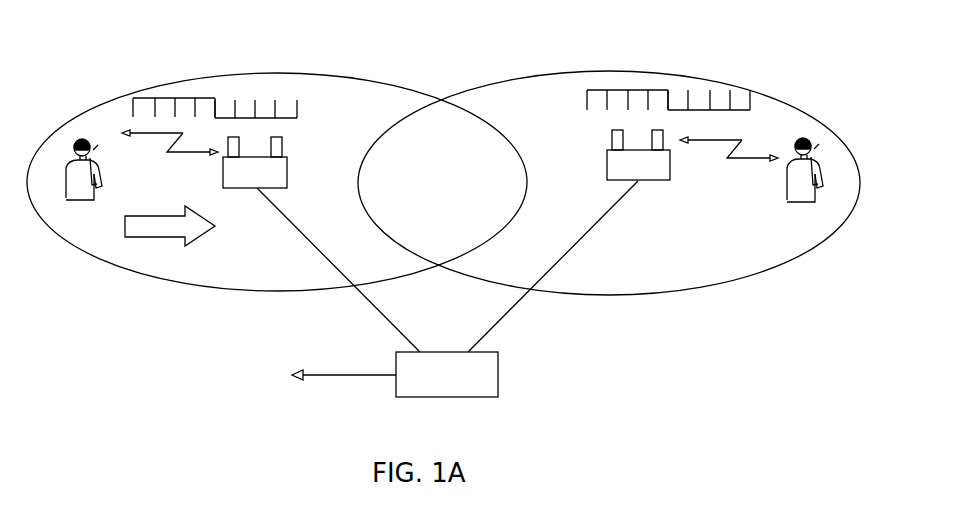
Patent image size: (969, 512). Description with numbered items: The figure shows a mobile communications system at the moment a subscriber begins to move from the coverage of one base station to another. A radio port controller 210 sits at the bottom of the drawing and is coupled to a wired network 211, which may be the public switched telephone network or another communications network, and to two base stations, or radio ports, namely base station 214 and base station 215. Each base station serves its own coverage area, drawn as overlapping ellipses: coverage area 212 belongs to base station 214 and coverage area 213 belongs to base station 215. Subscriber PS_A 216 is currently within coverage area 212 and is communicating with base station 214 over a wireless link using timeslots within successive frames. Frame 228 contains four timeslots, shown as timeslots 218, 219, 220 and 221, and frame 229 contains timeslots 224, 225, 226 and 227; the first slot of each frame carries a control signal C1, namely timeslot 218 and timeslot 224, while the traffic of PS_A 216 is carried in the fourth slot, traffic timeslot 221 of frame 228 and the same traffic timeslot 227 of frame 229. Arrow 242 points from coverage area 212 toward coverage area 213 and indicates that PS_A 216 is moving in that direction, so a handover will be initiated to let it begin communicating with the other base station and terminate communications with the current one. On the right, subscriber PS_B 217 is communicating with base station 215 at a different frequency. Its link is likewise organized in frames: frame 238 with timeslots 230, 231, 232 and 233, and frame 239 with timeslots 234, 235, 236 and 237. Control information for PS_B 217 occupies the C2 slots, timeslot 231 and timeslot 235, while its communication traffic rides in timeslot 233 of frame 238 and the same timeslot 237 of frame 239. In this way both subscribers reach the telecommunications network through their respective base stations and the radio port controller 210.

The radio port controller 210 is at (498, 368).
The wired network 211 is at (182, 398).
The coverage area 212 is at (82, 257).
The coverage area 213 is at (745, 272).
The base station 214 is at (235, 189).
The base station 215 is at (655, 181).
The subscriber PS_A 216 is at (107, 192).
The subscriber PS_B 217 is at (822, 166).
The control signal timeslot C1 218 is at (142, 113).
The timeslot 219 is at (163, 113).
The timeslot 220 is at (183, 113).
The traffic timeslot 221 is at (203, 113).
The control signal timeslot C1 224 is at (224, 117).
The timeslot 225 is at (244, 117).
The timeslot 226 is at (264, 117).
The traffic timeslot 227 is at (284, 117).
The frame 228 is at (174, 77).
The frame 229 is at (256, 80).
The timeslot 230 is at (595, 105).
The control signal timeslot C2 231 is at (615, 105).
The timeslot 232 is at (636, 105).
The traffic timeslot 233 is at (656, 105).
The timeslot 234 is at (677, 109).
The control signal timeslot C2 235 is at (697, 109).
The timeslot 236 is at (718, 109).
The traffic timeslot 237 is at (738, 109).
The frame 238 is at (627, 63).
The frame 239 is at (710, 67).
The arrow 242 is at (170, 226).